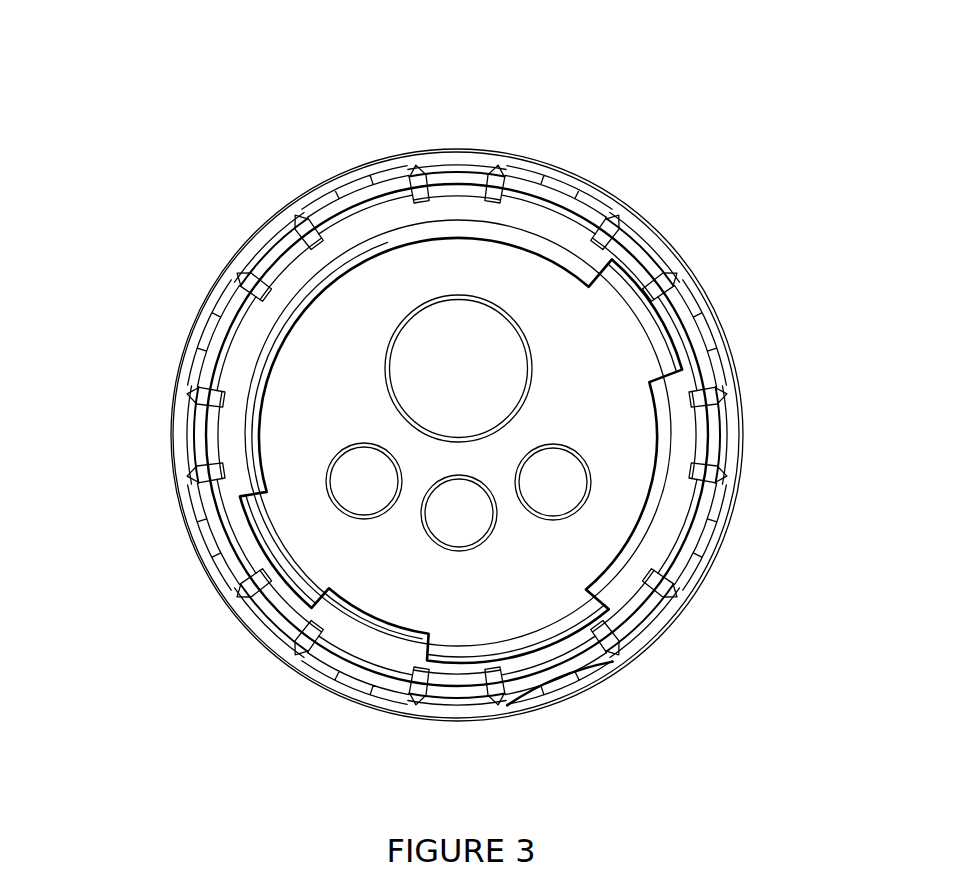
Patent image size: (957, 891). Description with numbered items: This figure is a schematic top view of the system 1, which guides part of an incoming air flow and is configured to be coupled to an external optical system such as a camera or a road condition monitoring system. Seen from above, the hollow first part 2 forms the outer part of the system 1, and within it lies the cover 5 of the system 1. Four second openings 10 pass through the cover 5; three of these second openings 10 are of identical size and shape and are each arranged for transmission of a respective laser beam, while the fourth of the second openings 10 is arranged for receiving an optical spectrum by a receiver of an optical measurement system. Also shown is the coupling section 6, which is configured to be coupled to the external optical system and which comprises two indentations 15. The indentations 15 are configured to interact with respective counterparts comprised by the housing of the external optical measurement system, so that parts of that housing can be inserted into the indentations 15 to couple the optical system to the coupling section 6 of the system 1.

The system 1 is at (637, 95).
The hollow first part 2 is at (737, 423).
The cover 5 is at (342, 357).
The coupling section 6 is at (222, 438).
The second openings 10 is at (479, 380).
The indentations 15 is at (640, 273).